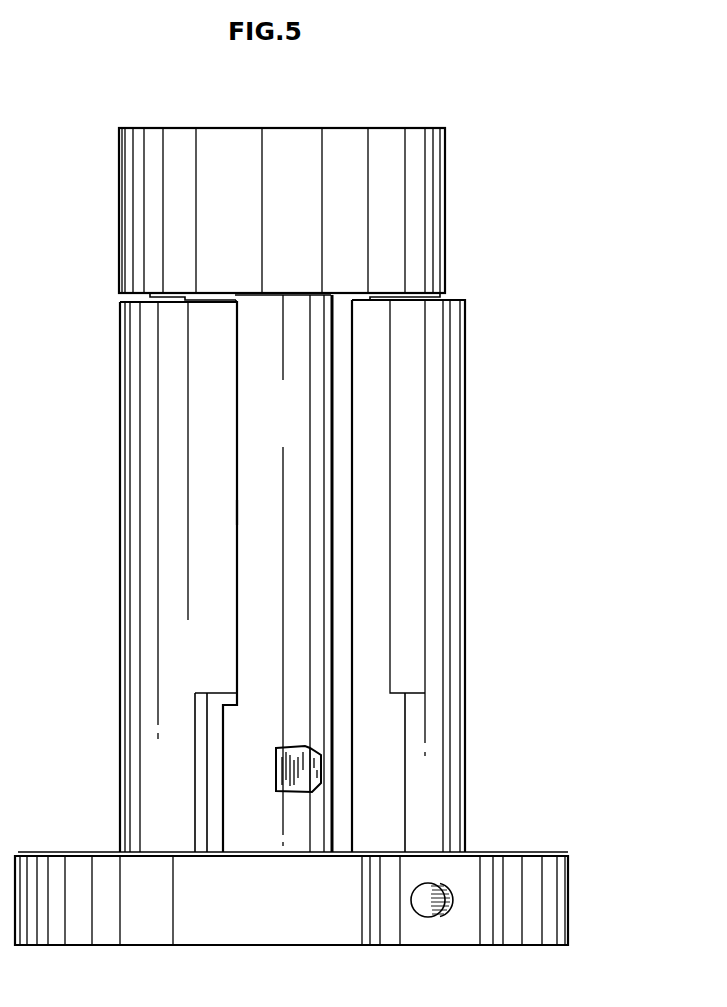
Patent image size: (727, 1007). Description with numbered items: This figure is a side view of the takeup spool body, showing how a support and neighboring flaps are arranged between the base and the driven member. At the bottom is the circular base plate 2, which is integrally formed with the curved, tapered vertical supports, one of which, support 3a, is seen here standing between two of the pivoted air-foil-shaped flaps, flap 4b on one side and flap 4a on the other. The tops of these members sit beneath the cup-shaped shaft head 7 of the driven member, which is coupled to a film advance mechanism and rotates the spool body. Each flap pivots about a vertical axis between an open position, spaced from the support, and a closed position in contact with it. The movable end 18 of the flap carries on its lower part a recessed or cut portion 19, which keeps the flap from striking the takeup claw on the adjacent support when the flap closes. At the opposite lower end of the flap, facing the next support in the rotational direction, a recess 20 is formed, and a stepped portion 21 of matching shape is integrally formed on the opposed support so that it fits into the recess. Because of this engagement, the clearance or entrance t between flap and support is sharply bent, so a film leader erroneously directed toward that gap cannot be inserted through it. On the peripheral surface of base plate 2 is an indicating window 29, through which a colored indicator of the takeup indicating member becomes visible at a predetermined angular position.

The shaft head 7 is at (425, 205).
The flap 4b is at (158, 423).
The flap 4a is at (442, 403).
The support 3a is at (288, 422).
The clearance t is at (236, 512).
The movable end 18 is at (383, 563).
The recessed portion 19 is at (402, 718).
The recess 20 is at (197, 760).
The stepped portion 21 is at (237, 815).
The base plate 2 is at (306, 898).
The indicating window 29 is at (430, 908).